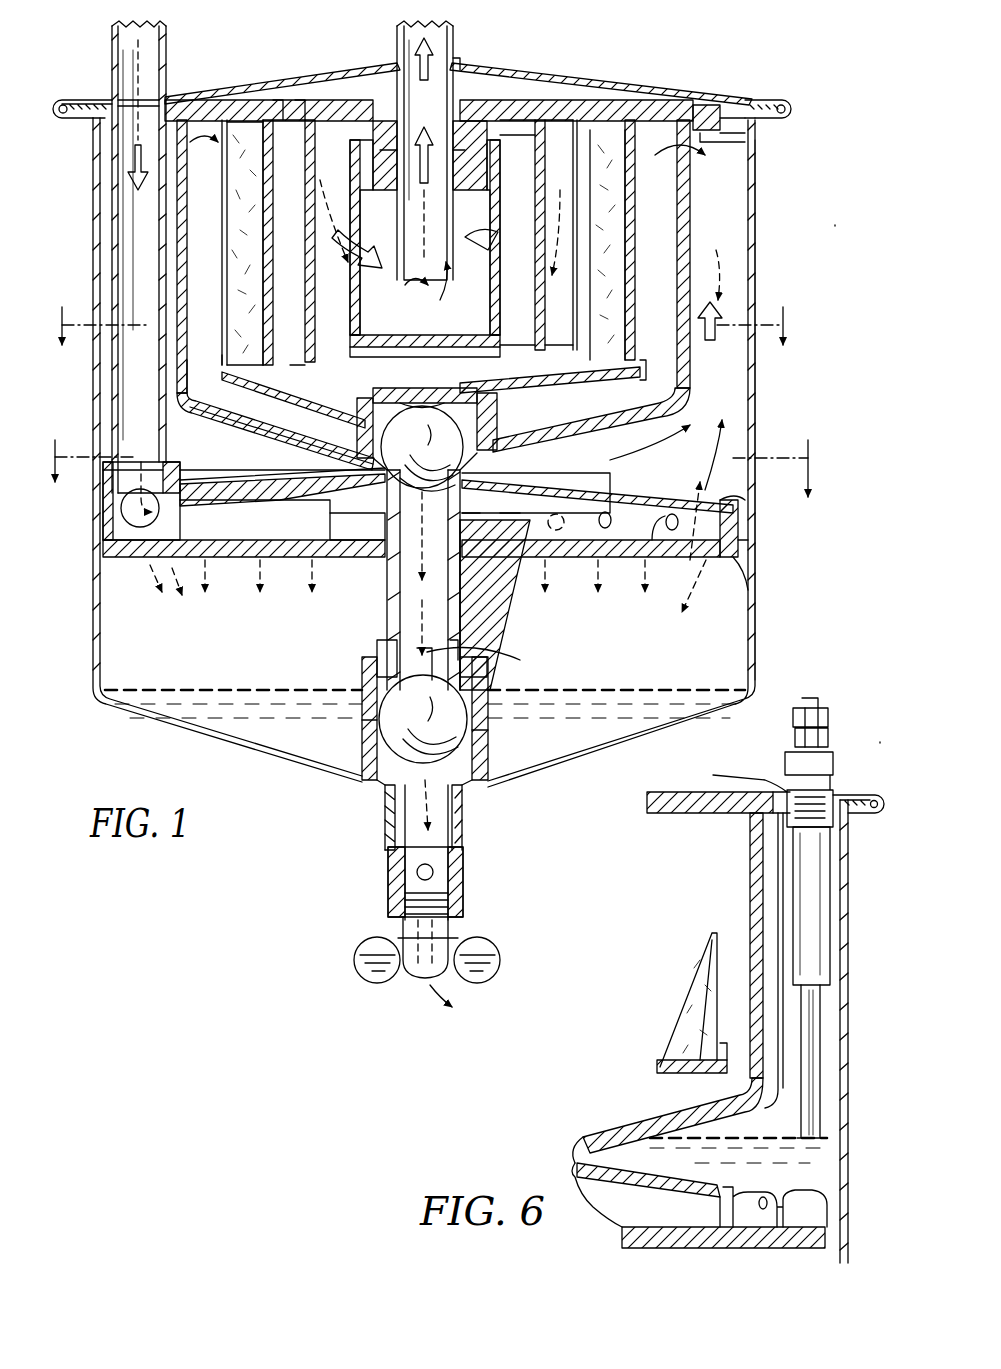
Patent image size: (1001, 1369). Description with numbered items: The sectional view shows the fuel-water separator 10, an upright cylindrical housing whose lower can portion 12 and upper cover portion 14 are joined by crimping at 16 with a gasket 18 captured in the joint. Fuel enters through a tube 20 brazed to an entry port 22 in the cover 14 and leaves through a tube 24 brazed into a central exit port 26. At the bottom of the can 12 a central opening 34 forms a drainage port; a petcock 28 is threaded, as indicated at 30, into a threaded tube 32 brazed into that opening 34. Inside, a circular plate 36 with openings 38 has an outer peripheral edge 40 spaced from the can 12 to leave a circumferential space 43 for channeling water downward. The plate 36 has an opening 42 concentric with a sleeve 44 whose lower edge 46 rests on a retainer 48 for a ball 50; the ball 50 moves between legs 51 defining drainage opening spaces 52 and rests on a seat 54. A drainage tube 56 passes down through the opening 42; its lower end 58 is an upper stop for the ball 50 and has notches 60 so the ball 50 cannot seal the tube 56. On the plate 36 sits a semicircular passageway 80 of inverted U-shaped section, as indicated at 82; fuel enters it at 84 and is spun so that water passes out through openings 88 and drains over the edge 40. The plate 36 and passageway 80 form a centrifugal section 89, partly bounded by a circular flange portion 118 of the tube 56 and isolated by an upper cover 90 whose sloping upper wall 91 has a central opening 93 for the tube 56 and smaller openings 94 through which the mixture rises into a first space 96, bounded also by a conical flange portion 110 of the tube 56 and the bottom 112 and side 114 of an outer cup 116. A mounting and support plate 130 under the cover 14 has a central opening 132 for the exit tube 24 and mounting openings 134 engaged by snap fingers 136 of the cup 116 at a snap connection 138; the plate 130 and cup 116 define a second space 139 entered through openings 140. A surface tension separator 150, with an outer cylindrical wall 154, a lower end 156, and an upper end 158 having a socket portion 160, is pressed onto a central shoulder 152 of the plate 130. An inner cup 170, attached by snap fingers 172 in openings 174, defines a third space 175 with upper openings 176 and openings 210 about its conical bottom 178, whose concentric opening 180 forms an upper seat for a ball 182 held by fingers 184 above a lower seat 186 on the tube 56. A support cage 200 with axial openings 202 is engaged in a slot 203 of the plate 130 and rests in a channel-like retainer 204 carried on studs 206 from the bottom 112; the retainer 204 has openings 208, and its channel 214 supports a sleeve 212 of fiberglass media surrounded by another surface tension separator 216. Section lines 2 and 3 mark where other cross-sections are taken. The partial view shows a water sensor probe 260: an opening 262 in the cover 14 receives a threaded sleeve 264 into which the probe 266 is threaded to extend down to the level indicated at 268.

In FIG. 1, the fuel-water separator housing 10 is at (836, 226).
In FIG. 1, the can portion 12 is at (97, 432).
In FIG. 6, the can portion 12 is at (849, 970).
In FIG. 1, the cover portion 14 is at (367, 70).
In FIG. 1, the crimp joint 16 is at (803, 122).
In FIG. 1, the gasket 18 is at (747, 101).
In FIG. 1, the entry tube 20 is at (112, 42).
In FIG. 1, the entry port 22 is at (118, 108).
In FIG. 1, the exit tube 24 is at (453, 42).
In FIG. 1, the central exit port 26 is at (460, 62).
In FIG. 1, the petcock 28 is at (388, 891).
In FIG. 1, the threaded connection 30 is at (406, 843).
In FIG. 1, the threaded tube 32 is at (392, 826).
In FIG. 1, the central opening 34 is at (386, 790).
In FIG. 1, the circular plate 36 is at (279, 552).
In FIG. 6, the circular plate 36 is at (752, 1250).
In FIG. 1, the openings 38 is at (208, 558).
In FIG. 1, the outer peripheral edge 40 is at (722, 566).
In FIG. 1, the opening 42 is at (397, 592).
In FIG. 1, the circumferential space 43 is at (740, 558).
In FIG. 1, the sleeve 44 is at (486, 613).
In FIG. 1, the lower edge 46 is at (377, 670).
In FIG. 1, the retainer 48 is at (366, 708).
In FIG. 1, the ball 50 is at (480, 762).
In FIG. 1, the legs 51 is at (370, 745).
In FIG. 1, the drainage opening spaces 52 is at (486, 735).
In FIG. 1, the seat 54 is at (478, 790).
In FIG. 1, the drainage tube 56 is at (466, 581).
In FIG. 1, the lower end 58 is at (372, 720).
In FIG. 1, the notches 60 is at (494, 660).
In FIG. 1, the fuel passageway 80 is at (241, 491).
In FIG. 1, the inverted U-shaped cross-section 82 is at (604, 500).
In FIG. 1, the passageway entry 84 is at (108, 522).
In FIG. 1, the openings 88 is at (582, 494).
In FIG. 1, the centrifugal section 89 is at (282, 502).
In FIG. 1, the upper cover 90 is at (740, 497).
In FIG. 1, the upper wall 91 is at (306, 490).
In FIG. 1, the central opening 93 is at (477, 503).
In FIG. 1, the smaller openings 94 is at (510, 503).
In FIG. 1, the first space 96 is at (458, 434).
In FIG. 1, the conical flange portion 110 is at (518, 464).
In FIG. 1, the bottom 112 is at (598, 420).
In FIG. 6, the bottom 112 is at (705, 1116).
In FIG. 1, the side 114 is at (749, 241).
In FIG. 6, the side 114 is at (751, 889).
In FIG. 1, the outer cup 116 is at (691, 216).
In FIG. 6, the outer cup 116 is at (772, 922).
In FIG. 1, the circular flange portion 118 is at (366, 520).
In FIG. 1, the mounting and support plate 130 is at (542, 130).
In FIG. 1, the central opening 132 is at (407, 100).
In FIG. 1, the mounting openings 134 is at (733, 97).
In FIG. 1, the snap fingers 136 is at (705, 104).
In FIG. 1, the snap connection 138 is at (740, 137).
In FIG. 1, the second space 139 is at (677, 295).
In FIG. 1, the openings 140 is at (205, 120).
In FIG. 1, the surface tension separator 150 is at (496, 313).
In FIG. 1, the central shoulder 152 is at (424, 149).
In FIG. 1, the outer cylindrical wall 154 is at (350, 284).
In FIG. 1, the lower end 156 is at (437, 335).
In FIG. 1, the upper end 158 is at (486, 135).
In FIG. 1, the socket portion 160 is at (468, 155).
In FIG. 1, the inner cup 170 is at (308, 292).
In FIG. 1, the snap fingers 172 is at (306, 108).
In FIG. 1, the openings 174 is at (289, 103).
In FIG. 1, the third space 175 is at (515, 343).
In FIG. 1, the openings 176 is at (546, 121).
In FIG. 1, the bottom 178 is at (346, 383).
In FIG. 1, the upper seat opening 180 is at (432, 393).
In FIG. 1, the ball 182 is at (491, 427).
In FIG. 1, the fingers 184 is at (357, 410).
In FIG. 1, the lower seat 186 is at (422, 448).
In FIG. 1, the support cage 200 is at (290, 160).
In FIG. 1, the openings 202 is at (240, 237).
In FIG. 1, the slot 203 is at (283, 108).
In FIG. 1, the retainer ring 204 is at (240, 386).
In FIG. 6, the retainer ring 204 is at (668, 1070).
In FIG. 1, the studs 206 is at (622, 444).
In FIG. 1, the openings 208 is at (210, 368).
In FIG. 1, the openings 210 is at (304, 368).
In FIG. 1, the fiberglass media sleeve 212 is at (238, 250).
In FIG. 6, the fiberglass media sleeve 212 is at (690, 982).
In FIG. 1, the channel 214 is at (231, 337).
In FIG. 1, the surface tension separator 216 is at (265, 197).
In FIG. 6, the surface tension separator 216 is at (710, 950).
In FIG. 6, the water sensor probe assembly 260 is at (880, 743).
In FIG. 6, the opening 262 is at (752, 826).
In FIG. 6, the threaded sleeve 264 is at (788, 792).
In FIG. 6, the probe 266 is at (822, 858).
In FIG. 6, the probe level 268 is at (830, 1135).
In FIG. 1, the section line 2 is at (441, 462).
In FIG. 1, the section line 3 is at (426, 326).